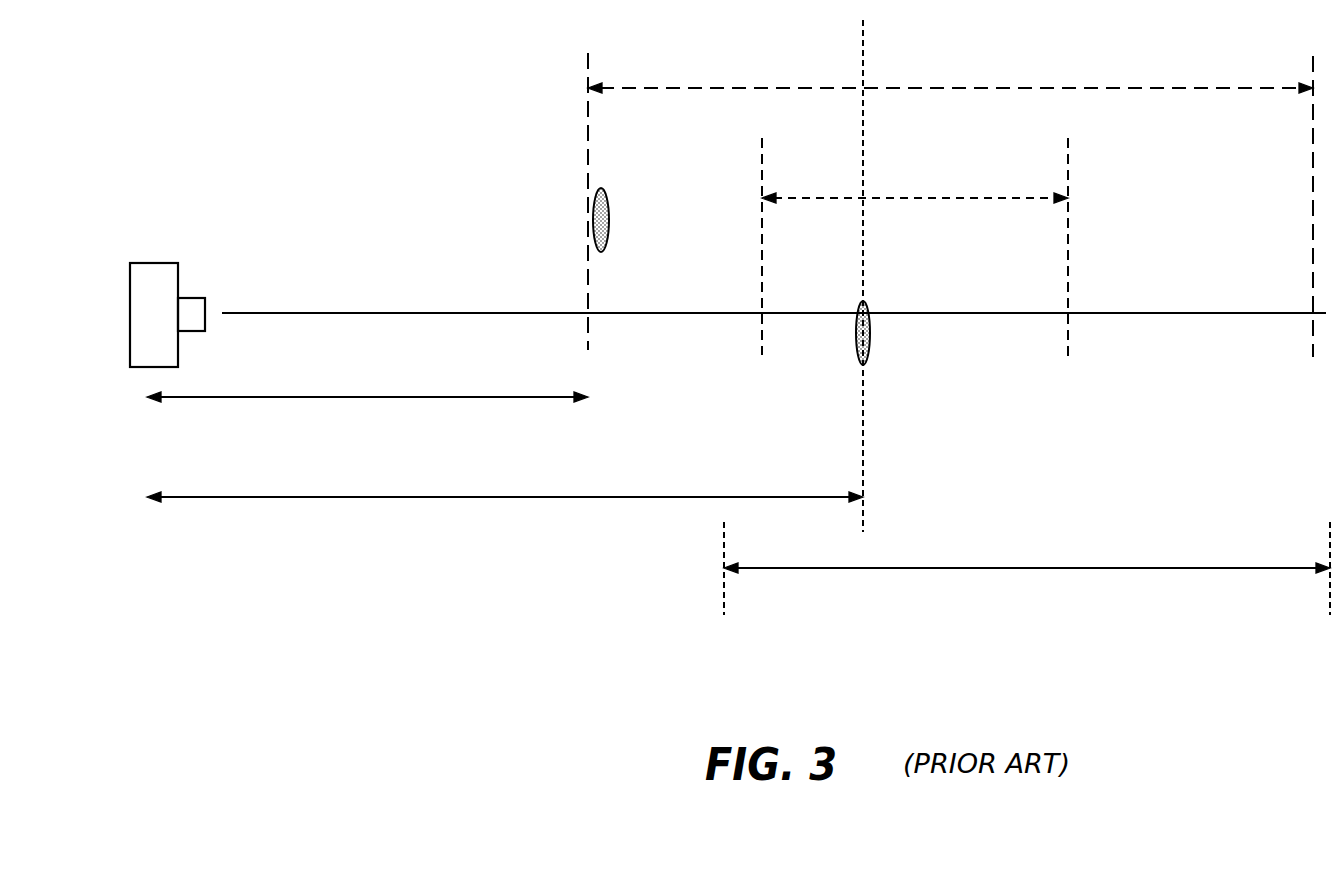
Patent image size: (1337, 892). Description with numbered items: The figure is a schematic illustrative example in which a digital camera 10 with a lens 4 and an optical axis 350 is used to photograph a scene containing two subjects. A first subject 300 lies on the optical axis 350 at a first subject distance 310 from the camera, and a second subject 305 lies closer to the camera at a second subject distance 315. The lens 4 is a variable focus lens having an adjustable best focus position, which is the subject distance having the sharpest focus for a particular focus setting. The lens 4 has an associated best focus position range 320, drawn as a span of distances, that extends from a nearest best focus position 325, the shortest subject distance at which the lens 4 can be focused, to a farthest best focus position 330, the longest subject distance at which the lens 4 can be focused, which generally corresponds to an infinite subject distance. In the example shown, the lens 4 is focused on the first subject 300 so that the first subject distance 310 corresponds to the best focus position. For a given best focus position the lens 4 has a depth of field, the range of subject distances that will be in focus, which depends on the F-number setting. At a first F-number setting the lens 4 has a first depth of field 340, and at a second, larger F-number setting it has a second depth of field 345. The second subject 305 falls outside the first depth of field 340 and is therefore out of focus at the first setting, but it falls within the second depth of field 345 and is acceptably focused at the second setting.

The digital camera 10 is at (155, 263).
The lens 4 is at (193, 298).
The optical axis 350 is at (345, 313).
The second subject 305 is at (600, 188).
The first subject 300 is at (868, 358).
The second subject distance 315 is at (373, 397).
The first subject distance 310 is at (505, 497).
The best focus position range 320 is at (1055, 568).
The nearest best focus position 325 is at (724, 615).
The farthest best focus position 330 is at (1330, 615).
The first depth of field 340 is at (968, 198).
The second depth of field 345 is at (1115, 88).